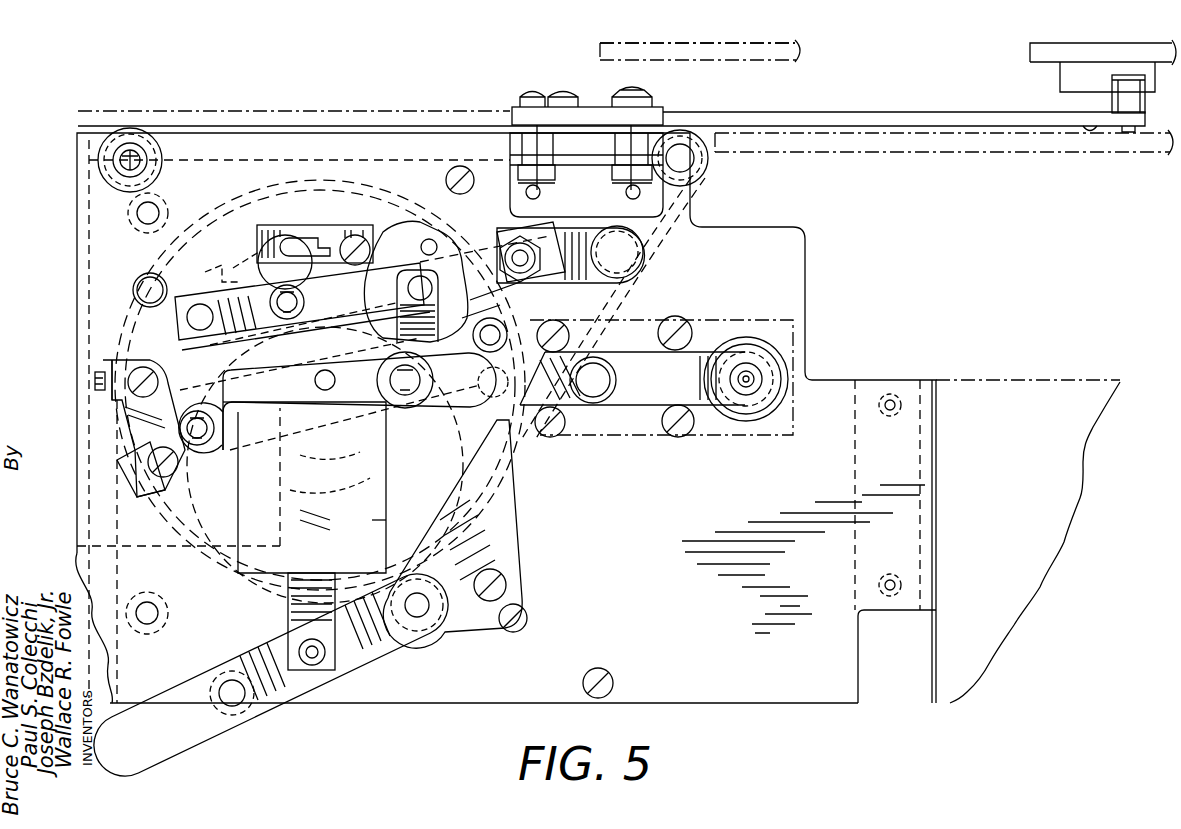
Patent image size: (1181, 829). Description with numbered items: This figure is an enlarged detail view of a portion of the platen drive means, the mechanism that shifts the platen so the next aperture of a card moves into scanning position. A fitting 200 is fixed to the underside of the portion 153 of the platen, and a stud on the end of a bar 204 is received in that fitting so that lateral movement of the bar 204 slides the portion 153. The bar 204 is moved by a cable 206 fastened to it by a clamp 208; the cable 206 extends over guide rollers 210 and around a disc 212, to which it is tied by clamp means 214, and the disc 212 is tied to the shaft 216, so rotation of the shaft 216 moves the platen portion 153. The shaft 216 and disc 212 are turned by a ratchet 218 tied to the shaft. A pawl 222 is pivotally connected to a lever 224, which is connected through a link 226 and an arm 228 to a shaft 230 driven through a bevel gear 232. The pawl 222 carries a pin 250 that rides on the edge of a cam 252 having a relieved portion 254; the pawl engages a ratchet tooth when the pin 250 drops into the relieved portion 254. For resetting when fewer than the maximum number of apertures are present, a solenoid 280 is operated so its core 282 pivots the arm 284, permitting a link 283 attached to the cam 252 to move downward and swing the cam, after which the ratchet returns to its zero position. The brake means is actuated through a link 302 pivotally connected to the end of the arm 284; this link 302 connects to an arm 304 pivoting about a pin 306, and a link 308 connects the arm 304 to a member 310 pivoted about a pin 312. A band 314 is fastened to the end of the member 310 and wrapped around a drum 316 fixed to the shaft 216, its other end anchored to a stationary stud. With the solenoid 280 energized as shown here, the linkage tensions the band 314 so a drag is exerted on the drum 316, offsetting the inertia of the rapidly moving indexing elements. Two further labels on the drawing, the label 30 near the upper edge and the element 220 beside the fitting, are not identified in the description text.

The machine frame 30 is at (591, 32).
The portion of the platen 153 is at (1125, 45).
The fitting 200 is at (1060, 72).
The bar 204 is at (876, 124).
The cable 206 is at (335, 128).
The clamp 208 is at (585, 85).
The guide rollers 210 is at (150, 140).
The disc 212 is at (290, 178).
The clamp means 214 is at (105, 385).
The shaft 216 is at (325, 372).
The ratchet 218 is at (235, 252).
The roller 220 is at (1120, 97).
The pawl 222 is at (462, 245).
The lever 224 is at (345, 345).
The link 226 is at (335, 462).
The arm 228 is at (648, 437).
The shaft 230 is at (755, 382).
The bevel gear 232 is at (762, 421).
The pin 250 is at (428, 238).
The cam 252 is at (360, 212).
The relieved portion 254 is at (205, 283).
The solenoid 280 is at (250, 556).
The core 282 is at (288, 608).
The link 283 is at (372, 522).
The arm 284 is at (272, 697).
The link 302 is at (465, 500).
The arm 304 is at (292, 245).
The pin 306 is at (265, 245).
The link 308 is at (95, 365).
The member 310 is at (258, 378).
The pin 312 is at (376, 342).
The band 314 is at (333, 486).
The drum 316 is at (322, 512).